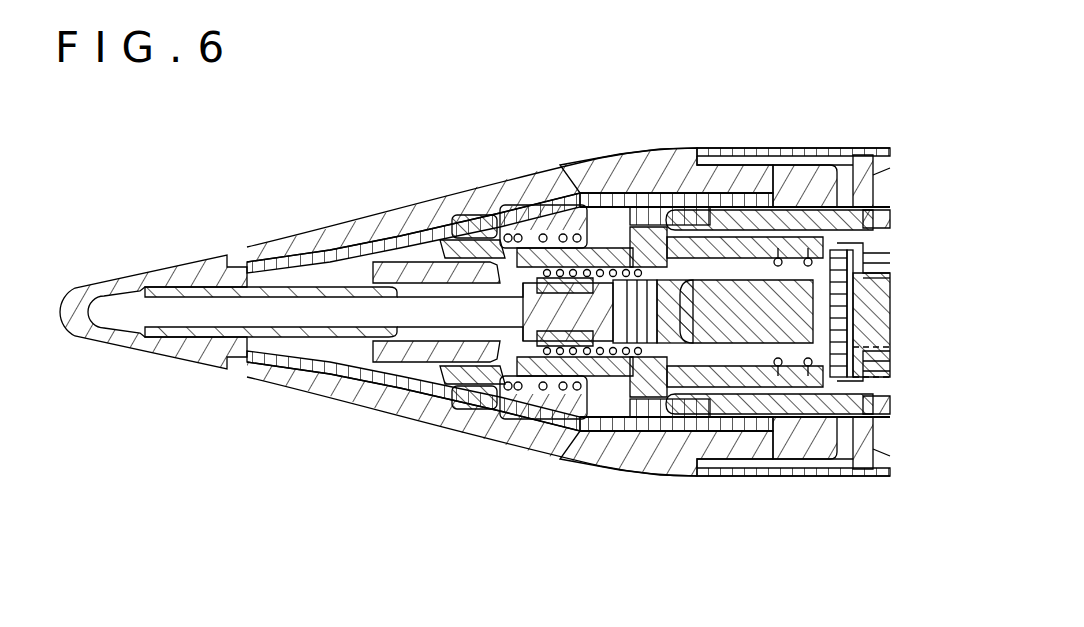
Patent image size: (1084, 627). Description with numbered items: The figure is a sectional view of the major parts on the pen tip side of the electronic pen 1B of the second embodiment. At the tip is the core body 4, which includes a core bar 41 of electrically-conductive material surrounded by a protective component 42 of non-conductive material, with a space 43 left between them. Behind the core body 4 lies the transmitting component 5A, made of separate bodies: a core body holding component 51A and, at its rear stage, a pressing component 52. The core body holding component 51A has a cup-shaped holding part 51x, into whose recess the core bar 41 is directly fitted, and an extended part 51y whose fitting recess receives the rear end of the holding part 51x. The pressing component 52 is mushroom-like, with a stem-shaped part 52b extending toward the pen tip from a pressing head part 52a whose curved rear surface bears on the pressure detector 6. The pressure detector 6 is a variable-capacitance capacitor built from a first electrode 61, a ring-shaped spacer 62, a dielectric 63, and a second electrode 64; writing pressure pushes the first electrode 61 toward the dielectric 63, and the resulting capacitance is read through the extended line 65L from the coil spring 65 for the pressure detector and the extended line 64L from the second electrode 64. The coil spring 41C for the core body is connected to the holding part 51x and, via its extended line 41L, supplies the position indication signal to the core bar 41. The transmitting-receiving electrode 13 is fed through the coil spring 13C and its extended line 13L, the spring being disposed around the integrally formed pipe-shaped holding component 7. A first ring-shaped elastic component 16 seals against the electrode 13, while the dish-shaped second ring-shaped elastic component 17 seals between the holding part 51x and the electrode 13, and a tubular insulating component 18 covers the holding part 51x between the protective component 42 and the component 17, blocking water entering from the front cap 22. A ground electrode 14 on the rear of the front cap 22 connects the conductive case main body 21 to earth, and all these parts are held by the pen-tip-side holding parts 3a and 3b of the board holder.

The electronic pen 1B is at (249, 159).
The core body 4 is at (190, 207).
The protective component 42 is at (78, 297).
The core bar 41 is at (122, 310).
The space 43 is at (170, 288).
The transmitting-receiving electrode 13 is at (326, 248).
The front cap 22 is at (378, 230).
The tubular insulating component 18 is at (430, 273).
The first ring-shaped elastic component 16 is at (470, 245).
The second ring-shaped elastic component 17 is at (492, 235).
The coil spring for the transmitting-receiving electrode 13C is at (538, 240).
The pen-tip-side holding part 3a is at (568, 245).
The pipe-shaped holding component 7 is at (604, 255).
The coil spring for the core body 41C is at (633, 206).
The ground electrode 14 is at (682, 197).
The case main body 21 is at (765, 149).
The pen-tip-side holding part 3b is at (872, 188).
The extended line of the coil spring for the core body 41L is at (883, 248).
The extended line of the coil spring for the transmitting-receiving electrode 13L is at (887, 280).
The extended line from the second electrode 64L is at (887, 347).
The extended line from the coil spring for the pressure detector 65L is at (887, 377).
The transmitting component 5A is at (460, 550).
The core body holding component 51A is at (545, 510).
The holding part 51x is at (478, 400).
The extended part 51y is at (532, 398).
The pressing component 52 is at (685, 510).
The stem-shaped part 52b is at (632, 402).
The pressing head part 52a is at (672, 402).
The coil spring for the pressure detector 65 is at (735, 365).
The pressure detector 6 is at (897, 517).
The first electrode 61 is at (783, 380).
The ring-shaped spacer 62 is at (815, 380).
The dielectric 63 is at (848, 387).
The second electrode 64 is at (889, 410).